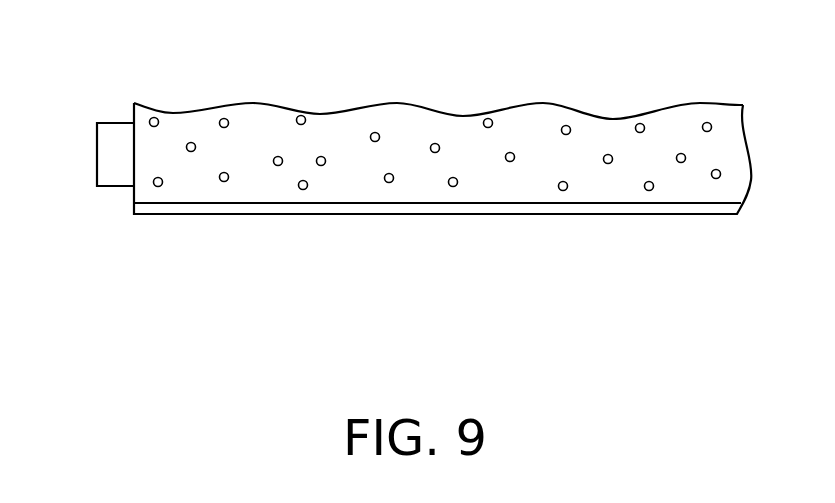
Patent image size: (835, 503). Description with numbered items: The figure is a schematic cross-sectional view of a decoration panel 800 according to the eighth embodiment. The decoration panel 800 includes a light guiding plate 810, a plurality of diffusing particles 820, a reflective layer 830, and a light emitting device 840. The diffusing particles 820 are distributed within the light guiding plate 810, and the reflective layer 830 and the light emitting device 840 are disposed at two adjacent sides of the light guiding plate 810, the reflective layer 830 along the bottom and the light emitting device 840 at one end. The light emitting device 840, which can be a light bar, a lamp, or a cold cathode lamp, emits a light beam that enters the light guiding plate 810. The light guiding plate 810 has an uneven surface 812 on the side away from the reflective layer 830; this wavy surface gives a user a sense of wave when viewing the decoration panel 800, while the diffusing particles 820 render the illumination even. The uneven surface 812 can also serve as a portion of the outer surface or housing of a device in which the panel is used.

The decoration panel 800 is at (403, 163).
The light guiding plate 810 is at (442, 161).
The uneven surface 812 is at (427, 107).
The diffusing particles 820 is at (510, 162).
The reflective layer 830 is at (293, 207).
The light emitting device 840 is at (117, 157).